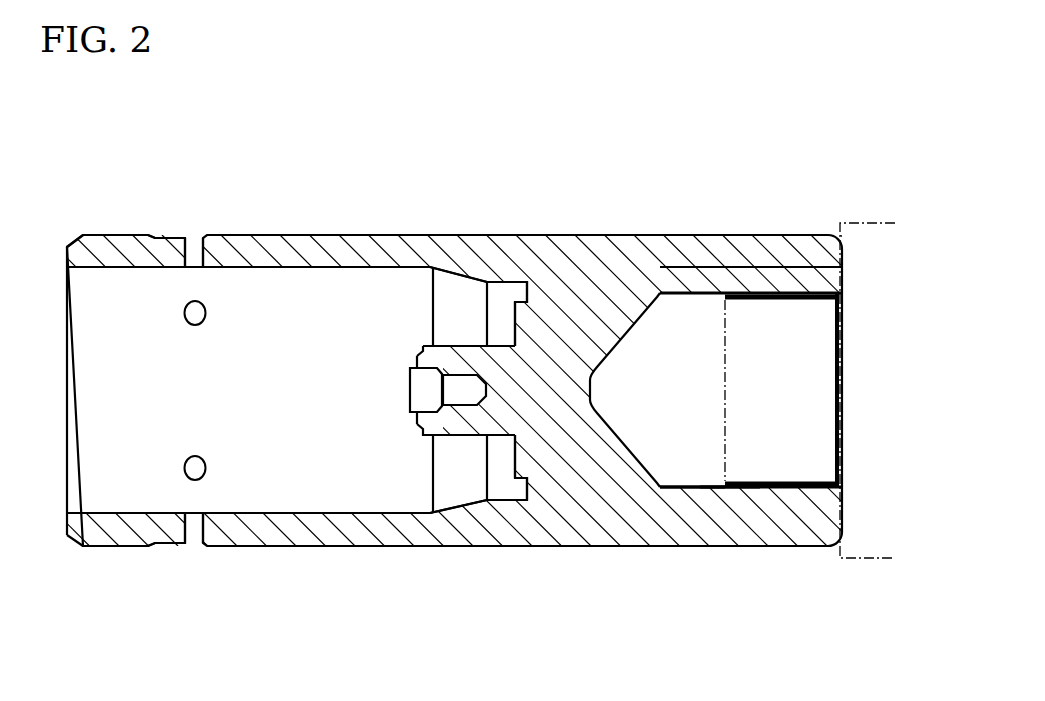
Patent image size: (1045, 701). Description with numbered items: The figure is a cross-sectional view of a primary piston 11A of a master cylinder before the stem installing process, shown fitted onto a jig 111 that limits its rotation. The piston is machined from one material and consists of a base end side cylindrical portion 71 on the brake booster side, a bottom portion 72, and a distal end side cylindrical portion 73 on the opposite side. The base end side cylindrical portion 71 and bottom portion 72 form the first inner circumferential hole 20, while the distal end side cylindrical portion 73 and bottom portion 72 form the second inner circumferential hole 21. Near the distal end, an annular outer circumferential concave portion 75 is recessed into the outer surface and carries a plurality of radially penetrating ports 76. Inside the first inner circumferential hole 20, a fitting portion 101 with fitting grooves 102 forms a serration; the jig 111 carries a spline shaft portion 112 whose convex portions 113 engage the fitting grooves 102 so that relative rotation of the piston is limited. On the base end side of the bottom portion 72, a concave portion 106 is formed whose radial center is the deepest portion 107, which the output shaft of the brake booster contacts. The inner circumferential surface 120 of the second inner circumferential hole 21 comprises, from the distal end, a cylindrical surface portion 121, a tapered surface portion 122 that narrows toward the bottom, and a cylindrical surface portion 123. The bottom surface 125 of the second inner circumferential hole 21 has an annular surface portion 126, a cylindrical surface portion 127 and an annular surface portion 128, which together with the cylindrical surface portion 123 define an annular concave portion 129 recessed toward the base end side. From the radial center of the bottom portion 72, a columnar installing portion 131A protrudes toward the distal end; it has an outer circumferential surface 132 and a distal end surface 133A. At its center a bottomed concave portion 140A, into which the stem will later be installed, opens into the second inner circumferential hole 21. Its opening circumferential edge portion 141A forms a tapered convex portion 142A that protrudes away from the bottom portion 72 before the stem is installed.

The primary piston 11A is at (527, 202).
The jig 111 is at (873, 206).
The distal end side cylindrical portion 73 is at (98, 235).
The outer circumferential concave portion 75 is at (175, 238).
The ports 76 is at (193, 248).
The second inner circumferential hole 21 is at (317, 268).
The concave portion 140A is at (410, 375).
The opening circumferential edge portion 141A is at (415, 358).
The convex portion 142A is at (410, 398).
The distal end surface 133A is at (417, 425).
The installing portion 131A is at (423, 347).
The annular surface portion 126 is at (527, 272).
The annular surface portion 128 is at (507, 320).
The annular concave portion 129 is at (493, 283).
The outer circumferential surface 132 is at (437, 512).
The tapered surface portion 122 is at (447, 512).
The cylindrical surface portion 123 is at (500, 490).
The bottom surface 125 is at (520, 503).
The cylindrical surface portion 127 is at (521, 484).
The bottom portion 72 is at (553, 383).
The concave portion 106 is at (600, 362).
The deepest portion 107 is at (592, 394).
The first inner circumferential hole 20 is at (700, 300).
The base end side cylindrical portion 71 is at (725, 252).
The spline shaft portion 112 is at (788, 288).
The convex portions 113 is at (770, 490).
The fitting grooves 102 is at (675, 486).
The fitting portion 101 is at (700, 486).
The inner circumferential surface 120 is at (163, 515).
The cylindrical surface portion 121 is at (277, 513).